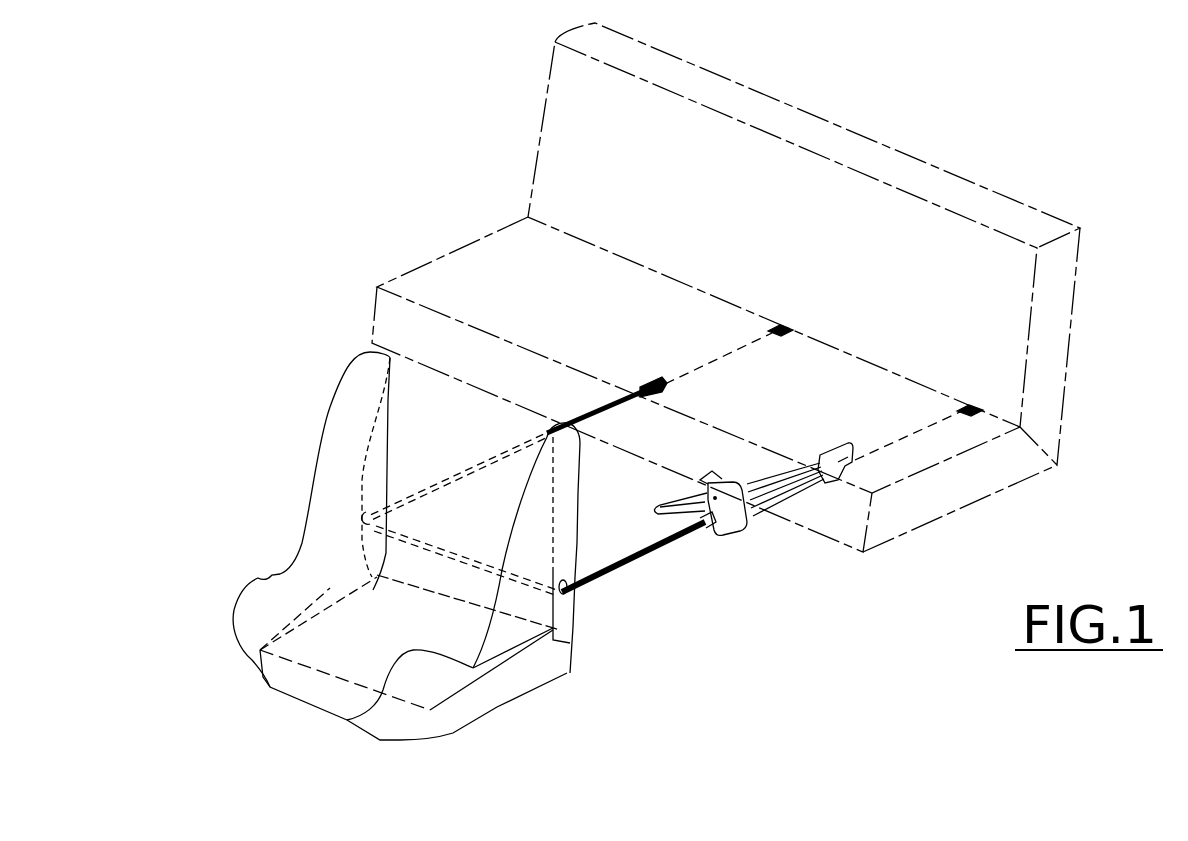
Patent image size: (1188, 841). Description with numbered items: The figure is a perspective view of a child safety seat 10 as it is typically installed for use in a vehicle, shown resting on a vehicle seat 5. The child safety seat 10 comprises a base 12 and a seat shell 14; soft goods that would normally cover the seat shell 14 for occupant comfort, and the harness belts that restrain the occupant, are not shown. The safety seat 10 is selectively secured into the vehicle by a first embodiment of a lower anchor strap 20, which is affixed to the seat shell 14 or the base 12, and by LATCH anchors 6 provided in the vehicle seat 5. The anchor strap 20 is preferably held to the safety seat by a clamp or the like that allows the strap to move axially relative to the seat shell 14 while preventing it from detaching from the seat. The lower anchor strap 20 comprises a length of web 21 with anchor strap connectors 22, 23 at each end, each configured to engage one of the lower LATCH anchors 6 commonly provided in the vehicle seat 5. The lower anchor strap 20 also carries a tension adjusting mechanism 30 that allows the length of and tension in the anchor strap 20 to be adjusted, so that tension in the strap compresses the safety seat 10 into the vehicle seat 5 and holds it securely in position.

The vehicle seat 5 is at (690, 80).
The LATCH anchors 6 is at (785, 323).
The child safety seat 10 is at (371, 510).
The base 12 is at (497, 680).
The seat shell 14 is at (348, 390).
The lower anchor strap 20 is at (661, 492).
The web 21 is at (617, 575).
The anchor strap connector 22 is at (625, 393).
The anchor strap connector 23 is at (820, 453).
The tension adjusting mechanism 30 is at (775, 565).